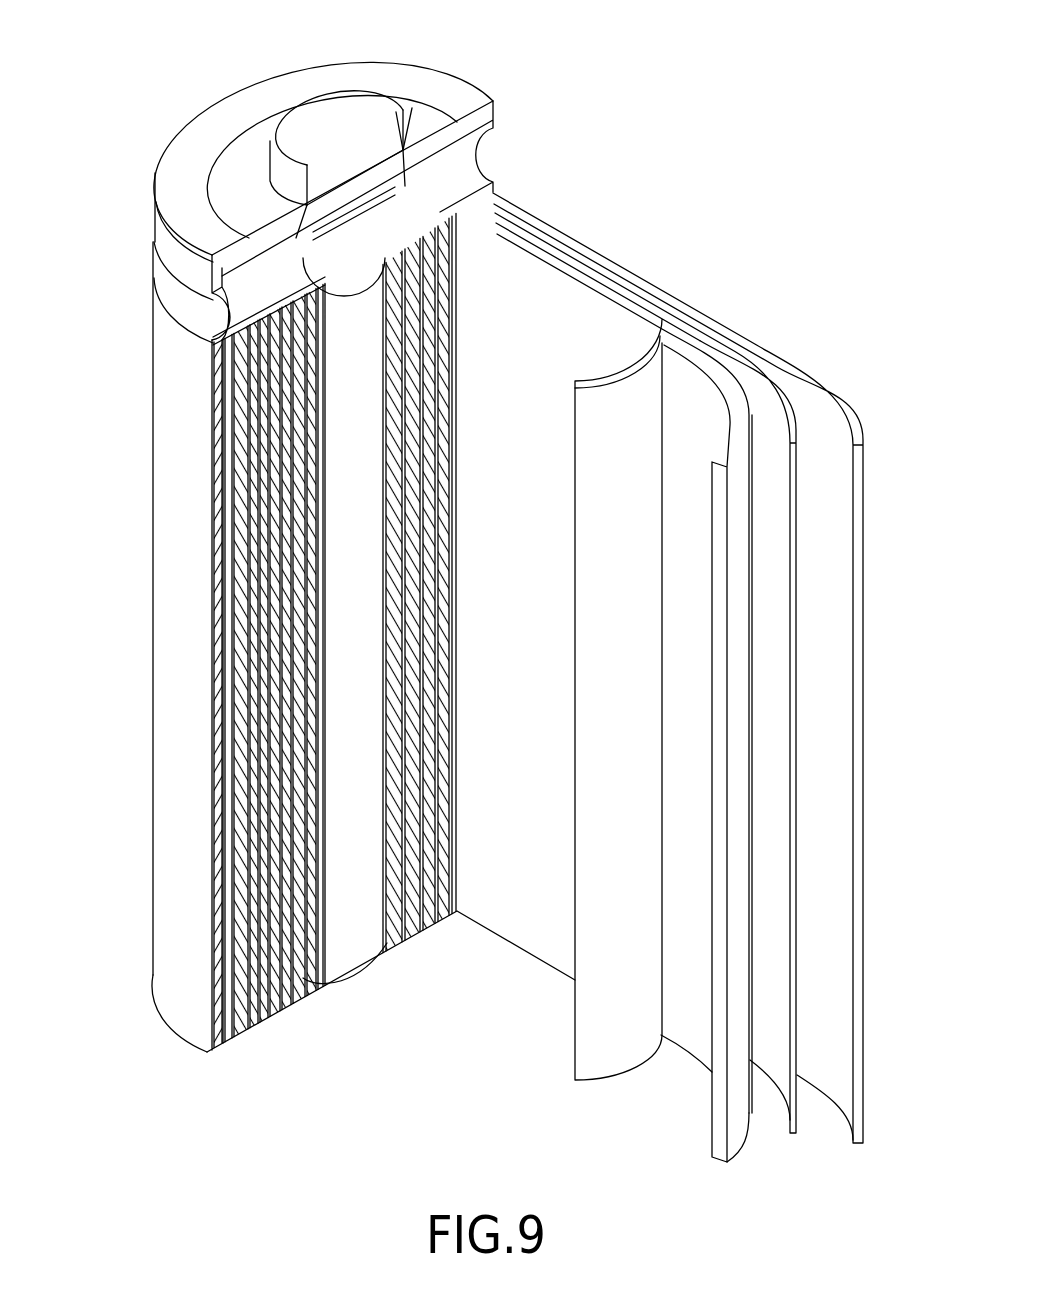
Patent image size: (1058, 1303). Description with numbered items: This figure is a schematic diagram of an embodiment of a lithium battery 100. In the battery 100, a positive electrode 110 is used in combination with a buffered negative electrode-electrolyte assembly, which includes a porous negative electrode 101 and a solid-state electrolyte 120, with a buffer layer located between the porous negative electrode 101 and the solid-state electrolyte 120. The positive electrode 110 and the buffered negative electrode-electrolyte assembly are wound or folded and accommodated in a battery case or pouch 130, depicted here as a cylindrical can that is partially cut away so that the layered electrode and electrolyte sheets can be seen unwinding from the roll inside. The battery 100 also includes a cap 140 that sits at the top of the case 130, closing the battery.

The battery 100 is at (712, 88).
The porous negative electrode 101 is at (845, 413).
The positive electrode 110 is at (688, 350).
The solid-state electrolyte 120 is at (583, 283).
The battery case or pouch 130 is at (153, 588).
The cap 140 is at (322, 122).